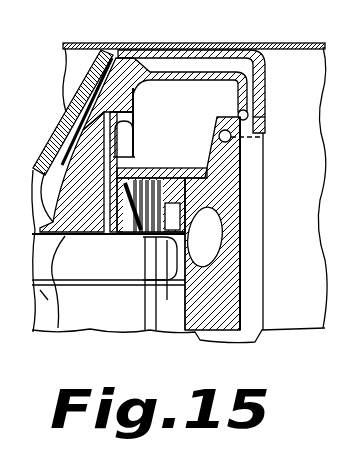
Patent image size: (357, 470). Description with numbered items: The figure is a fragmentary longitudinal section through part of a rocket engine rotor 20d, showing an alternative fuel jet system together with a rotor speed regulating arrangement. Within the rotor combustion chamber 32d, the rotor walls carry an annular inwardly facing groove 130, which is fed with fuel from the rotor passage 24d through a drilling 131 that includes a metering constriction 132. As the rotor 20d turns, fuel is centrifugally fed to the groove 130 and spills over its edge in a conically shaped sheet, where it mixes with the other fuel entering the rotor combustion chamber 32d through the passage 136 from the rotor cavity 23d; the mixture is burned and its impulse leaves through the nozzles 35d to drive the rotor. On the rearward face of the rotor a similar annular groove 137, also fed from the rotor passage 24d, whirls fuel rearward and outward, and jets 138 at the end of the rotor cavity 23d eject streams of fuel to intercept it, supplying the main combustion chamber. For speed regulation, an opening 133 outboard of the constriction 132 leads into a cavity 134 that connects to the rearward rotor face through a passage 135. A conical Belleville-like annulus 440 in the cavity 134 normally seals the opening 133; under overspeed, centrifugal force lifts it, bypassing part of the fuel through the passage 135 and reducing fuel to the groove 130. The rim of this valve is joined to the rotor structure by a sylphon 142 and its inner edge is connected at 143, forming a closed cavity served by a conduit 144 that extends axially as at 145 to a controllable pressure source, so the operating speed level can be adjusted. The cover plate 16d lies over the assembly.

The cover plate 16d is at (212, 43).
The nozzles 35d is at (266, 70).
The jets 138 is at (268, 128).
The rotor cavity 23d is at (73, 141).
The passage 136 is at (146, 96).
The annular inwardly facing groove 130 is at (142, 119).
The rotor combustion chamber 32d is at (150, 140).
The opening 133 is at (120, 164).
The cavity 134 is at (167, 186).
The passage 135 is at (212, 177).
The rotor 20d is at (240, 224).
The annular groove 137 is at (263, 139).
The rotor passage 24d is at (118, 278).
The metering constriction 132 is at (55, 258).
The shaft 440 is at (145, 283).
The drilling 131 is at (46, 290).
The sylphon 142 is at (130, 281).
The connection of valve inner edge 143 is at (150, 300).
The conduit extension 145 is at (30, 331).
The conduit 144 is at (153, 333).